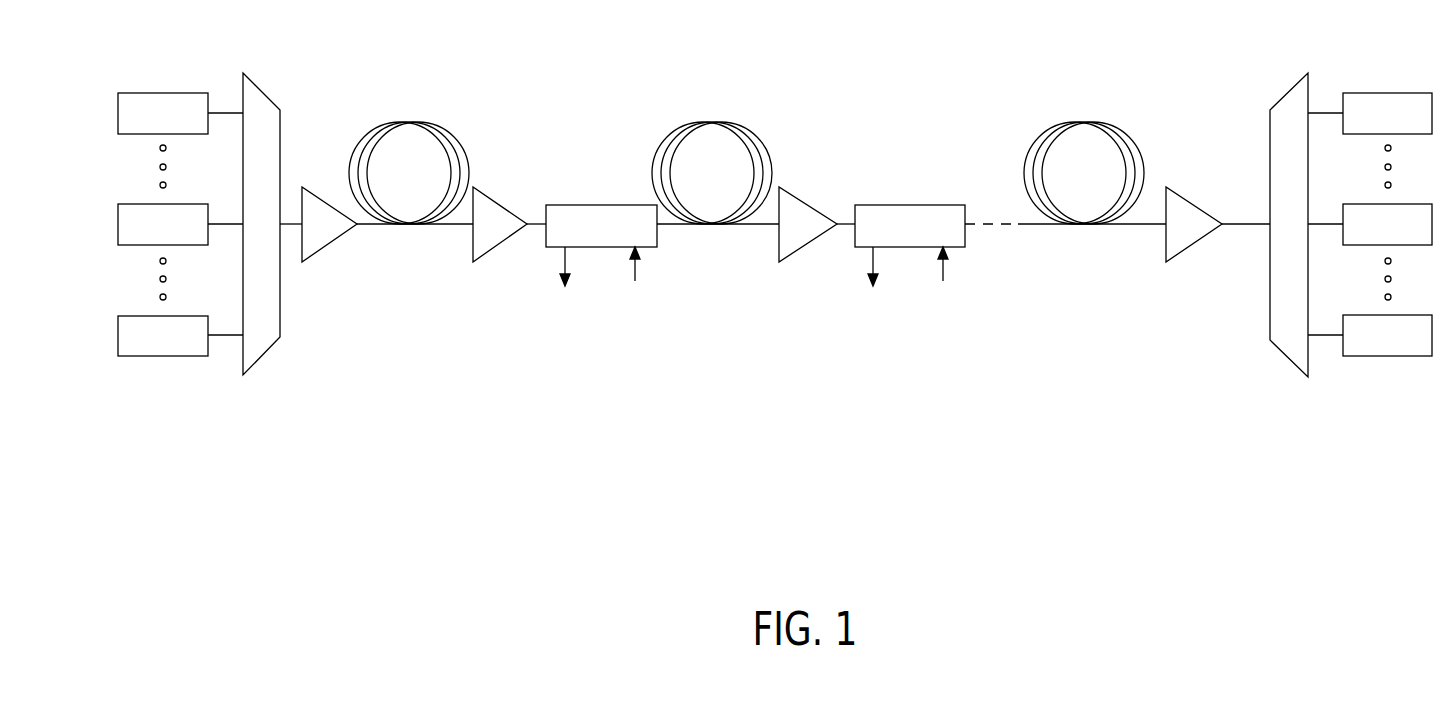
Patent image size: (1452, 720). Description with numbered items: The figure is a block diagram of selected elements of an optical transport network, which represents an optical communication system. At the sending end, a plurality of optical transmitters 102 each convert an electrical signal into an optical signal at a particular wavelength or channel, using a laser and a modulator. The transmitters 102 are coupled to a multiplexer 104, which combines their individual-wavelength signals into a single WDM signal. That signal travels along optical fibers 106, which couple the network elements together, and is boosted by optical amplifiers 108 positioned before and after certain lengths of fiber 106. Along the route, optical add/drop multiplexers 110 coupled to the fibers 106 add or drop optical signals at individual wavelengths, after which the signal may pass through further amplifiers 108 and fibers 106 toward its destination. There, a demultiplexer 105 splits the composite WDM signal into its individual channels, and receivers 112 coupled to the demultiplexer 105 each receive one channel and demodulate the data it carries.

The transmitters 102 is at (143, 93).
The multiplexer 104 is at (260, 83).
The demultiplexer 105 is at (1293, 87).
The optical fibers 106 is at (405, 122).
The optical amplifiers 108 is at (326, 247).
The optical add/drop multiplexers 110 is at (585, 205).
The receivers 112 is at (1402, 93).